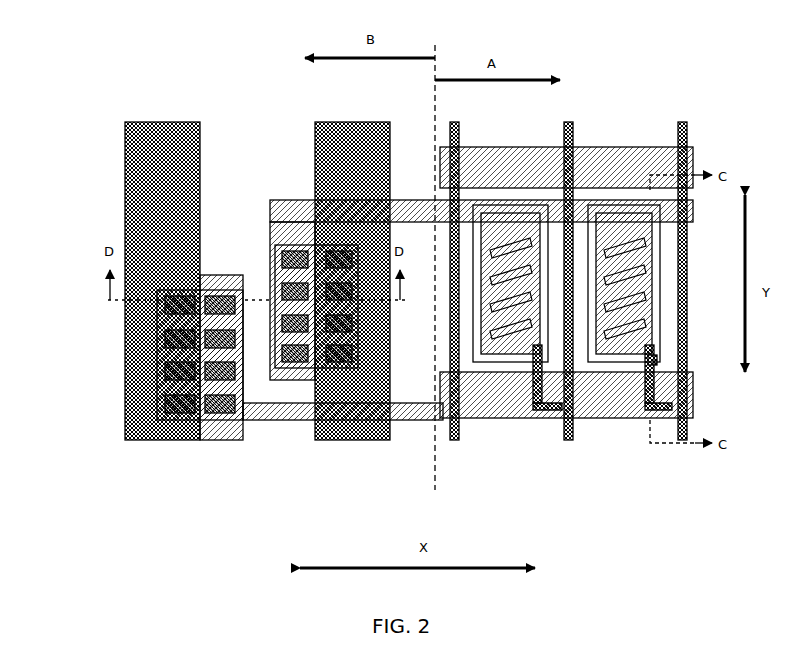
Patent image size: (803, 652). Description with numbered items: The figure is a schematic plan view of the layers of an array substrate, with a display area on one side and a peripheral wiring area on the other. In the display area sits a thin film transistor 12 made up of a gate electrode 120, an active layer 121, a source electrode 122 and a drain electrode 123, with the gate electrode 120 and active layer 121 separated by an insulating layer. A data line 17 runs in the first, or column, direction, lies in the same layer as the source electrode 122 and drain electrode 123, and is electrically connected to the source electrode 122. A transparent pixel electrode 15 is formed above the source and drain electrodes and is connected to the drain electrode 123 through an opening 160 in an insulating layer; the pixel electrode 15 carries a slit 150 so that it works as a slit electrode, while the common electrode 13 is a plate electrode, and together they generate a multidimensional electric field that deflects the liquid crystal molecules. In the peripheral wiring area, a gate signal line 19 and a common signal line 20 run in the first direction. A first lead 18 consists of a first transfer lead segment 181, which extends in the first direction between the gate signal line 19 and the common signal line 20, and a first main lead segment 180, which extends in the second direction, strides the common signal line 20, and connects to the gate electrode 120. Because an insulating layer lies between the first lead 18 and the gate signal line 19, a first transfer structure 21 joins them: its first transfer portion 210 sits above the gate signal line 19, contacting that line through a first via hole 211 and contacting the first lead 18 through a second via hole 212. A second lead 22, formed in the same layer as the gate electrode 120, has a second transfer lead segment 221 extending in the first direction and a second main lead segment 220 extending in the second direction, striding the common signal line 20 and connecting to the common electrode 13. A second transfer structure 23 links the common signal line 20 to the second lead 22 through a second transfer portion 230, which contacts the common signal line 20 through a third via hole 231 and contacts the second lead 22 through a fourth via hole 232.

The thin film transistor 12 is at (571, 425).
The gate electrode 120 is at (527, 400).
The active layer 121 is at (540, 385).
The source electrode 122 is at (552, 410).
The drain electrode 123 is at (533, 375).
The common electrode 13 is at (598, 325).
The pixel electrode 15 is at (625, 368).
The slit 150 is at (650, 287).
The opening 160 is at (655, 357).
The data line 17 is at (687, 310).
The first lead 18 is at (442, 402).
The first main lead segment 180 is at (268, 420).
The first transfer lead segment 181 is at (218, 440).
The gate signal line 19 is at (195, 122).
The common signal line 20 is at (370, 122).
The first transfer structure 21 is at (140, 355).
The first transfer portion 210 is at (170, 325).
The first via hole 211 is at (190, 355).
The second via hole 212 is at (210, 382).
The second lead 22 is at (468, 251).
The second main lead segment 220 is at (410, 205).
The second transfer lead segment 221 is at (340, 245).
The second transfer structure 23 is at (281, 264).
The second transfer portion 230 is at (278, 245).
The third via hole 231 is at (315, 243).
The fourth via hole 232 is at (282, 308).